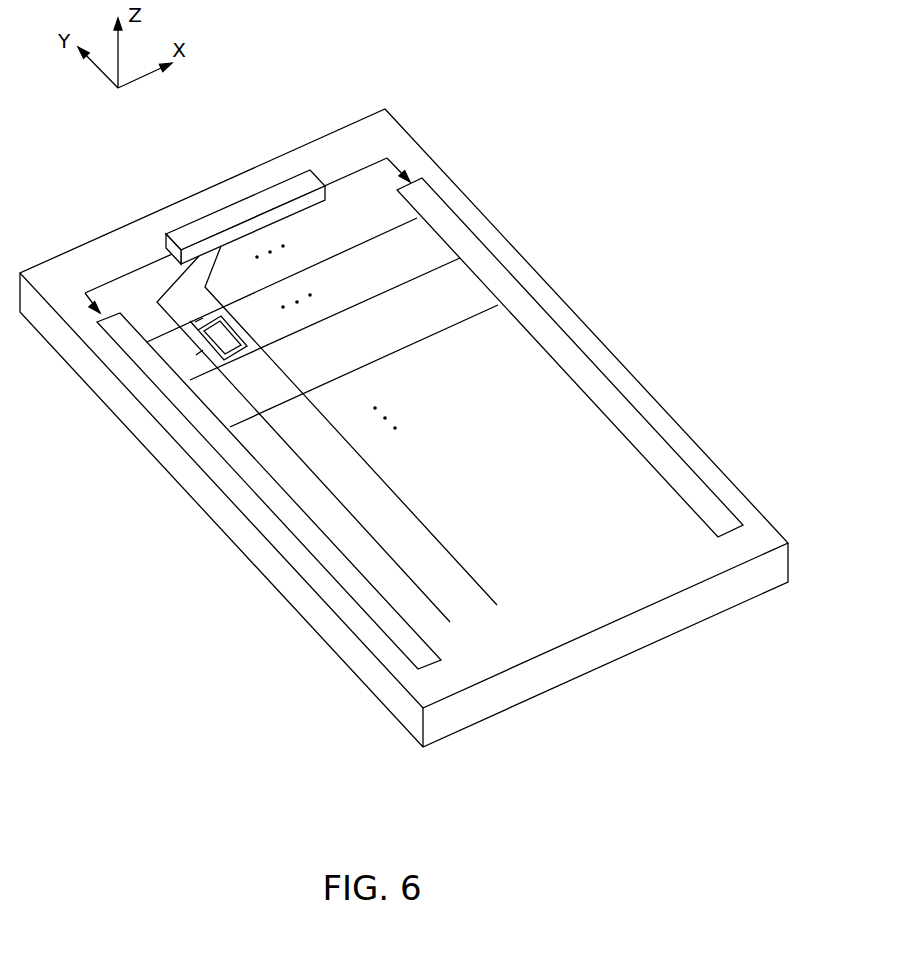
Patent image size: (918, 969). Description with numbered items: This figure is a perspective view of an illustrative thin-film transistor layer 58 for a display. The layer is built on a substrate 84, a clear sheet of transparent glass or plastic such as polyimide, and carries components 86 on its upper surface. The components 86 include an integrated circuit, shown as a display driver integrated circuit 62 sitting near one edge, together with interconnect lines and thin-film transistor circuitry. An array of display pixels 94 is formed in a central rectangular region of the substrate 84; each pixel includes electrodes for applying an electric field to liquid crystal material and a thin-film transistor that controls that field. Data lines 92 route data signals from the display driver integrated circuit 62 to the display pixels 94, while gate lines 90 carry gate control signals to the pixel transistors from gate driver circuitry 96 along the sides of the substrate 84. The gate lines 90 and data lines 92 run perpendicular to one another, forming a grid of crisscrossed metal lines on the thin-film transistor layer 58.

The thin-film transistor layer 58 is at (498, 116).
The display driver integrated circuit 62 is at (238, 203).
The substrate 84 is at (728, 600).
The components 86 is at (100, 263).
The gate lines 90 is at (336, 253).
The data lines 92 is at (433, 527).
The display pixels 94 is at (236, 347).
The gate driver circuitry 96 is at (290, 522).